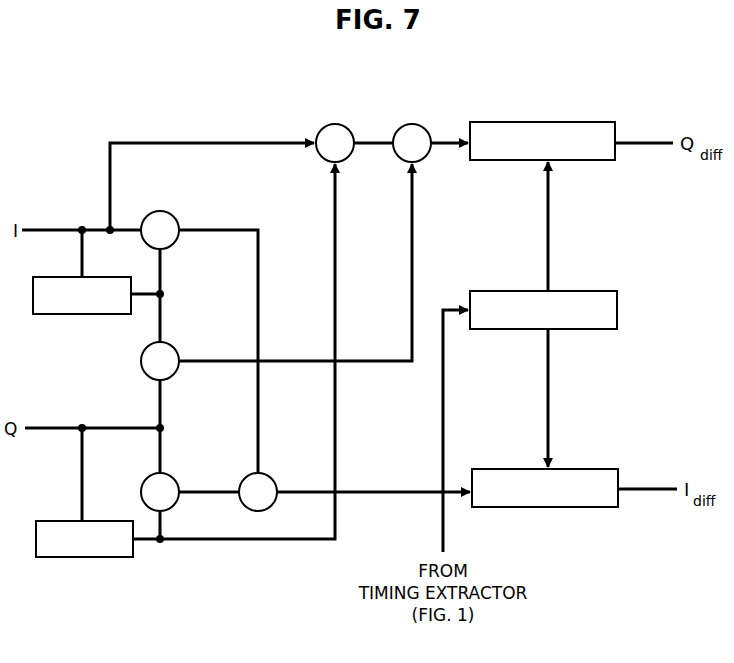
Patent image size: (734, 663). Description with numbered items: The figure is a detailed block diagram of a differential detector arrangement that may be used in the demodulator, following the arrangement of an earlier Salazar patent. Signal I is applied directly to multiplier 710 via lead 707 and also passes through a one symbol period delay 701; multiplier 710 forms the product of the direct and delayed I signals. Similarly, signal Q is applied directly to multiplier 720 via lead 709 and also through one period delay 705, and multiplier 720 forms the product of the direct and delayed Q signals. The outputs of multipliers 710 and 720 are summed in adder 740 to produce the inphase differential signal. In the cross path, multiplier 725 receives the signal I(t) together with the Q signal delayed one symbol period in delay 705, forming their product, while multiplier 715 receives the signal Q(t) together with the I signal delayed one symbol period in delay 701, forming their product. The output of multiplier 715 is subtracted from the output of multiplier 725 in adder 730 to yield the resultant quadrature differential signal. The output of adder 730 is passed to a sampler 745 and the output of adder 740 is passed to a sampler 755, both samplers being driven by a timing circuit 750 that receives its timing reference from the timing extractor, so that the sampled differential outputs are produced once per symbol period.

The one symbol period delay 701 is at (62, 314).
The one period delay 705 is at (68, 520).
The lead 707 is at (95, 228).
The lead 709 is at (133, 426).
The multiplier 710 is at (177, 218).
The multiplier 715 is at (177, 349).
The multiplier 720 is at (177, 480).
The multiplier 725 is at (348, 128).
The adder 730 is at (424, 127).
The adder 740 is at (272, 478).
The sampler 745 is at (530, 122).
The timing circuit 750 is at (585, 291).
The sampler 755 is at (588, 469).